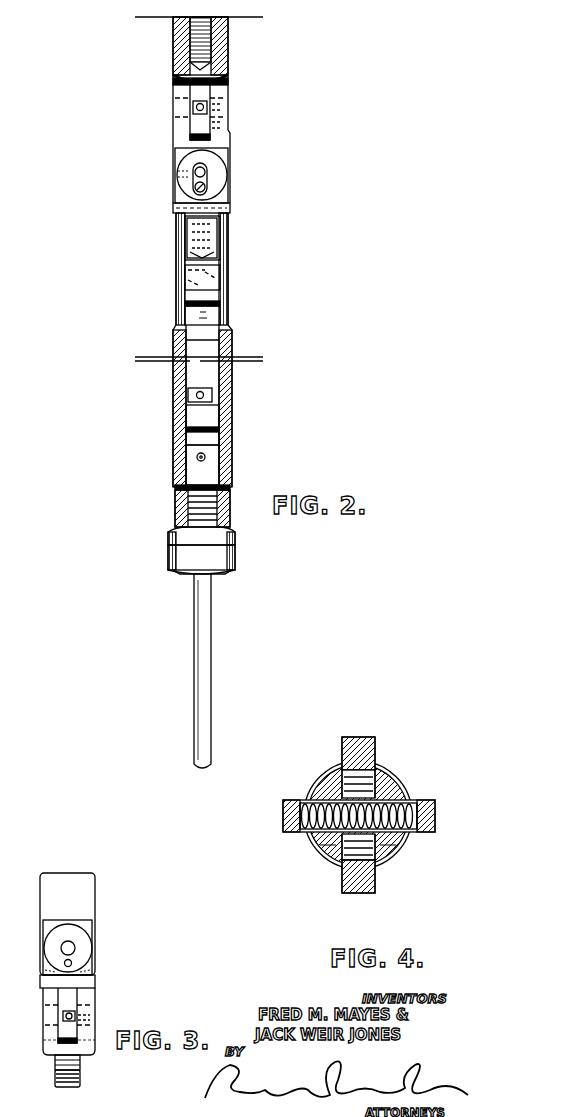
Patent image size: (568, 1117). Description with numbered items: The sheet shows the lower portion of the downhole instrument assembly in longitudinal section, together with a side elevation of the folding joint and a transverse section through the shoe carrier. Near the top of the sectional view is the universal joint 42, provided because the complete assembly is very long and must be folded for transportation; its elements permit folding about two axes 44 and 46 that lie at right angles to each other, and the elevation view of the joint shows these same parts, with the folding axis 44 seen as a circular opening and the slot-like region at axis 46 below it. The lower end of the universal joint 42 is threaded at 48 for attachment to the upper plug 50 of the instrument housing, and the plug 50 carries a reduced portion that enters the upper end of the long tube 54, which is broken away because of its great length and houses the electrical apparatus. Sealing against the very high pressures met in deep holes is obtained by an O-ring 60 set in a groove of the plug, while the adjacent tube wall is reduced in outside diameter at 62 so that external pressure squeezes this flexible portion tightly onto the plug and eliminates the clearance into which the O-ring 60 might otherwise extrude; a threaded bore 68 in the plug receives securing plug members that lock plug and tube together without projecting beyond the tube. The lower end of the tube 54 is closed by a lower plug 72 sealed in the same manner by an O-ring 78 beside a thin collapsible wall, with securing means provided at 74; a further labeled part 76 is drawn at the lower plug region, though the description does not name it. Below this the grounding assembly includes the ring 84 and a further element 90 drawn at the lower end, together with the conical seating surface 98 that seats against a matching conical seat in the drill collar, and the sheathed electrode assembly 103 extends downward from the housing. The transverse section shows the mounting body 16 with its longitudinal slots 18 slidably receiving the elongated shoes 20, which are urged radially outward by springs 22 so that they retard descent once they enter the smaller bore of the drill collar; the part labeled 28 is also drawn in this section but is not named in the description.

In FIG. 4, the mounting body 16 is at (392, 785).
In FIG. 4, the longitudinal slots 18 is at (318, 848).
In FIG. 4, the elongated shoes 20 is at (373, 740).
In FIG. 4, the springs 22 is at (330, 776).
In FIG. 4, the spring 28 is at (376, 880).
In FIG. 2, the universal joint 42 is at (240, 142).
In FIG. 3, the universal joint 42 is at (107, 978).
In FIG. 3, the folding axis 44 is at (75, 947).
In FIG. 3, the folding axis 46 is at (48, 1024).
In FIG. 2, the threaded lower end 48 is at (190, 237).
In FIG. 3, the threaded lower end 48 is at (81, 1079).
In FIG. 2, the upper plug 50 is at (222, 240).
In FIG. 2, the tube 54 is at (230, 352).
In FIG. 2, the O-ring 60 is at (226, 305).
In FIG. 2, the reduced wall portion 62 is at (181, 305).
In FIG. 2, the threaded bore 68 is at (173, 288).
In FIG. 2, the lower plug 72 is at (230, 489).
In FIG. 2, the securing means 74 is at (196, 460).
In FIG. 2, the piston 76 is at (226, 432).
In FIG. 2, the O-ring 78 is at (182, 428).
In FIG. 2, the ring 84 is at (172, 540).
In FIG. 2, the nut 90 is at (238, 556).
In FIG. 2, the conical seating surface 98 is at (172, 572).
In FIG. 2, the electrode assembly 103 is at (212, 686).